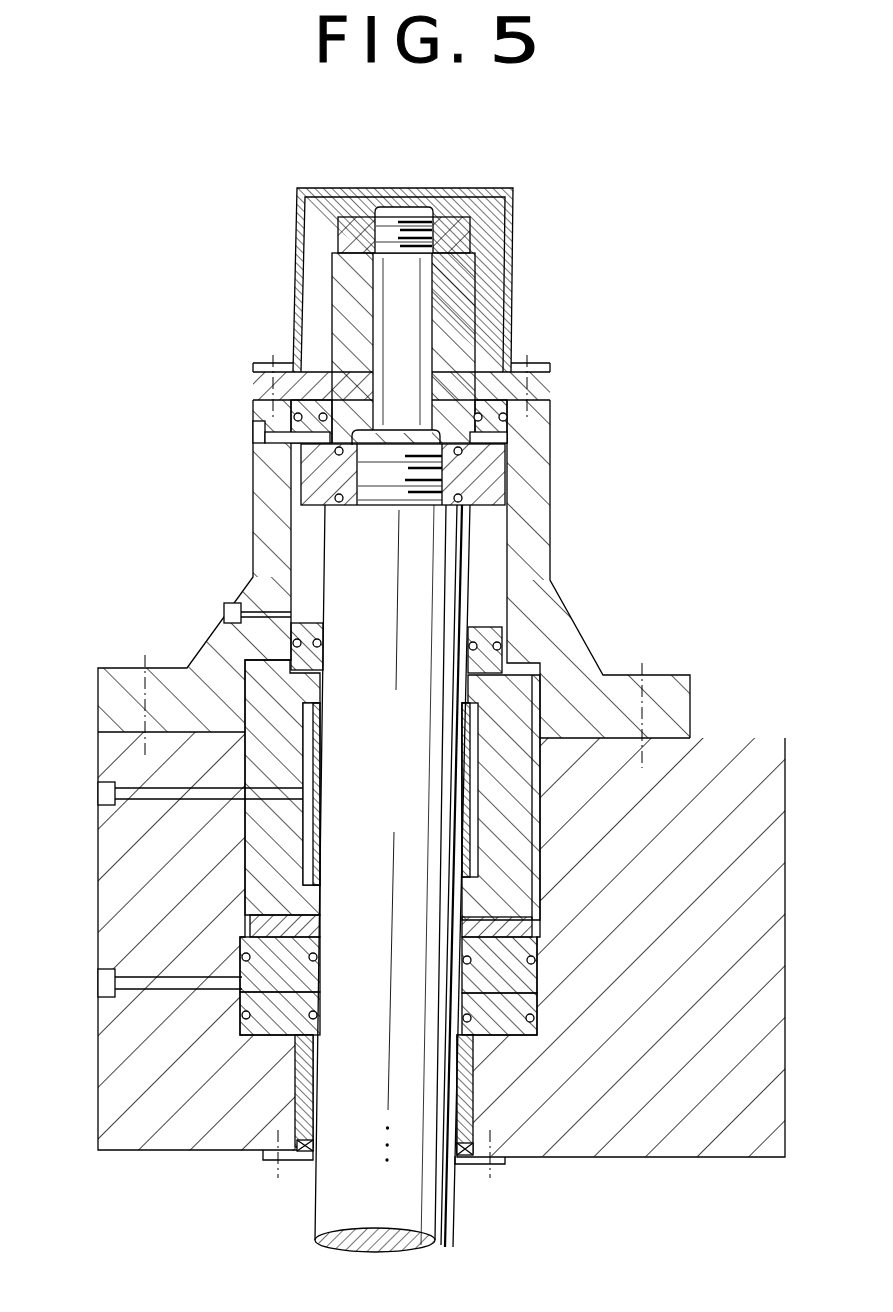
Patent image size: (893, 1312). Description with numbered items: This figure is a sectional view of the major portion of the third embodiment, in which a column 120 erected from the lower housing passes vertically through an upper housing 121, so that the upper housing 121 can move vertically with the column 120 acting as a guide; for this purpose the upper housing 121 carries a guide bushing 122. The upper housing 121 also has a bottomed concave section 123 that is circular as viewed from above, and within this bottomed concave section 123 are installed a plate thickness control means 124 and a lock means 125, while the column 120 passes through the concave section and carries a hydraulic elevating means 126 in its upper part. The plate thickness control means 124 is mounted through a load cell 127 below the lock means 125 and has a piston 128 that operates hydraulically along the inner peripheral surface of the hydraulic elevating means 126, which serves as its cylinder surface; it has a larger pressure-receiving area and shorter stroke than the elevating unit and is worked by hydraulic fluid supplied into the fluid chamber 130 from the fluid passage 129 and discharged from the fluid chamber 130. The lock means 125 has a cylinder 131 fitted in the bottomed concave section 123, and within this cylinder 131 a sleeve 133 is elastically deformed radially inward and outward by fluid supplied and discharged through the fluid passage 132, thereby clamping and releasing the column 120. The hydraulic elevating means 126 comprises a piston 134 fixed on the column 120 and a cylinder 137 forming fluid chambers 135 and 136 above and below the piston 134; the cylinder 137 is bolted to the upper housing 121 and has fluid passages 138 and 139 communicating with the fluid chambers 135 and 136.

The column 120 is at (408, 827).
The upper housing 121 is at (712, 941).
The guide bushing 122 is at (467, 1110).
The bottomed concave section 123 is at (533, 876).
The plate thickness control means 124 is at (544, 990).
The lock means 125 is at (503, 808).
The hydraulic elevating means 126 is at (525, 498).
The load cell 127 is at (262, 924).
The piston 128 is at (503, 956).
The fluid passage 129 is at (120, 985).
The fluid chamber 130 is at (247, 990).
The cylinder 131 is at (512, 688).
The fluid passage 132 is at (120, 800).
The sleeve 133 is at (320, 730).
The piston 134 is at (290, 446).
The fluid chamber 135 is at (300, 425).
The fluid chamber 136 is at (302, 541).
The cylinder 137 is at (535, 555).
The fluid passage 138 is at (253, 441).
The fluid passage 139 is at (232, 612).